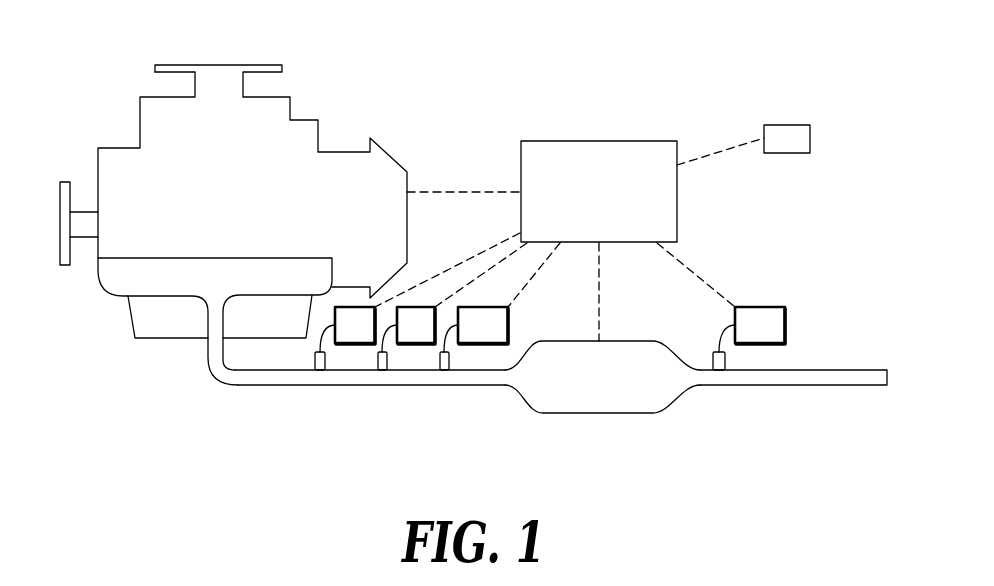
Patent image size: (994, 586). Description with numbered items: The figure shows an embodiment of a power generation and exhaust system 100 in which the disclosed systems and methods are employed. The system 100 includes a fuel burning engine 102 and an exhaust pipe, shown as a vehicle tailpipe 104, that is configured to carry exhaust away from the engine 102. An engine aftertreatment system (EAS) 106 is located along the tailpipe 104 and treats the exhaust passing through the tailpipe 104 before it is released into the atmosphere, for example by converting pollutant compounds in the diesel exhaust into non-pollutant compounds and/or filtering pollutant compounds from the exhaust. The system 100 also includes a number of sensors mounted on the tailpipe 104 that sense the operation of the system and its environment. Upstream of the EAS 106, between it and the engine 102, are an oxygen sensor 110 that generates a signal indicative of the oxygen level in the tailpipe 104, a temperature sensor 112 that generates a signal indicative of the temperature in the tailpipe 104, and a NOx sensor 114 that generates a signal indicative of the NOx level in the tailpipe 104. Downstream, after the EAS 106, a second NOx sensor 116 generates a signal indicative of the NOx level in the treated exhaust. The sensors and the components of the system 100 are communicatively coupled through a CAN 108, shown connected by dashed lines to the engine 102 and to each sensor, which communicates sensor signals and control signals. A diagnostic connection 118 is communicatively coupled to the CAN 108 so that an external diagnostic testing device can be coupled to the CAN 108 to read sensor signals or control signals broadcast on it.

The power generation and exhaust system 100 is at (722, 58).
The fuel burning engine 102 is at (127, 148).
The vehicle tailpipe 104 is at (248, 378).
The engine aftertreatment system 106 is at (578, 413).
The CAN 108 is at (618, 141).
The oxygen sensor 110 is at (352, 350).
The temperature sensor 112 is at (413, 350).
The NOx sensor 114 is at (483, 350).
The NOx sensor 116 is at (762, 350).
The diagnostic connection 118 is at (788, 125).